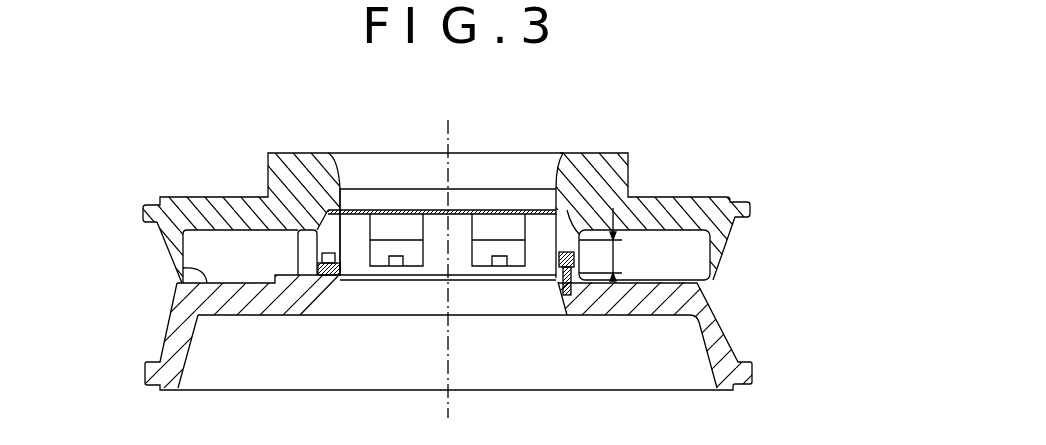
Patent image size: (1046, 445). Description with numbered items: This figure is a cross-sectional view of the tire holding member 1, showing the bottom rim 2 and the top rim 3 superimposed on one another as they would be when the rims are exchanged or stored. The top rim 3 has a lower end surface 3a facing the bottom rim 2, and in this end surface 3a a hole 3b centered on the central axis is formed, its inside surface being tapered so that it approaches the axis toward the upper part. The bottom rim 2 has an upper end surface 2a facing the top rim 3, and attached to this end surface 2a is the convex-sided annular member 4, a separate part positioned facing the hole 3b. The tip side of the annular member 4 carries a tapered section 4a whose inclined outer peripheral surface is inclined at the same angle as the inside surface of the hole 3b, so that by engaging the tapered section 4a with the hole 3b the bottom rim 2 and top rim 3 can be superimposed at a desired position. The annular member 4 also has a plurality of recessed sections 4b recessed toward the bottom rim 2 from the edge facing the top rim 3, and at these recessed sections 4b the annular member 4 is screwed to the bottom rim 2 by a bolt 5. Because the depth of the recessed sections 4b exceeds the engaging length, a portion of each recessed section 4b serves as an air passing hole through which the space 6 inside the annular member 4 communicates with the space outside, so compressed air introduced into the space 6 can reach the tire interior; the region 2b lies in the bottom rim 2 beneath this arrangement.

The tire holding member 1 is at (735, 119).
The bottom rim 2 is at (195, 311).
The end surface of bottom rim 2a is at (183, 273).
The opening of base body 2b is at (337, 292).
The top rim 3 is at (203, 217).
The end surface of top rim 3a is at (247, 232).
The hole 3b is at (352, 202).
The convex-sided annular member 4 is at (435, 243).
The tapered section 4a is at (306, 240).
The recessed sections 4b is at (523, 243).
The bolt 5 is at (568, 296).
The space 6 is at (481, 258).